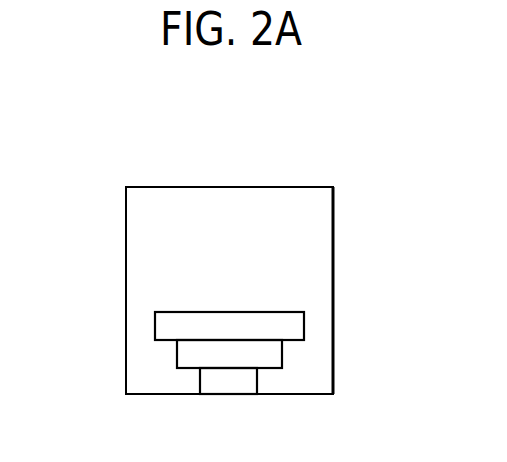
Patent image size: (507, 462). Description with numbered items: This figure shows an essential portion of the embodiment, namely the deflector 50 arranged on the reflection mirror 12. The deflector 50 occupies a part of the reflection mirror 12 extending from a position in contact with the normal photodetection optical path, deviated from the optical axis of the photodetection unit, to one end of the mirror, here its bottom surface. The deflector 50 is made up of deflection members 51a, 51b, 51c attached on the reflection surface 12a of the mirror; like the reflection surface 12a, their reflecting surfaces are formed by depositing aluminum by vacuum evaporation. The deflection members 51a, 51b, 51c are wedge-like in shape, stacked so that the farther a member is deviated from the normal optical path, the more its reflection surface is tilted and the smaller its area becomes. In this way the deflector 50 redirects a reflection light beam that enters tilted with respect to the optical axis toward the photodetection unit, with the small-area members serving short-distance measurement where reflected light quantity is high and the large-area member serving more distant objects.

The reflection mirror 12 is at (224, 187).
The reflection surface 12a is at (142, 270).
The deflector 50 is at (163, 363).
The deflection member 51a is at (245, 312).
The deflection member 51b is at (282, 350).
The deflection member 51c is at (257, 383).